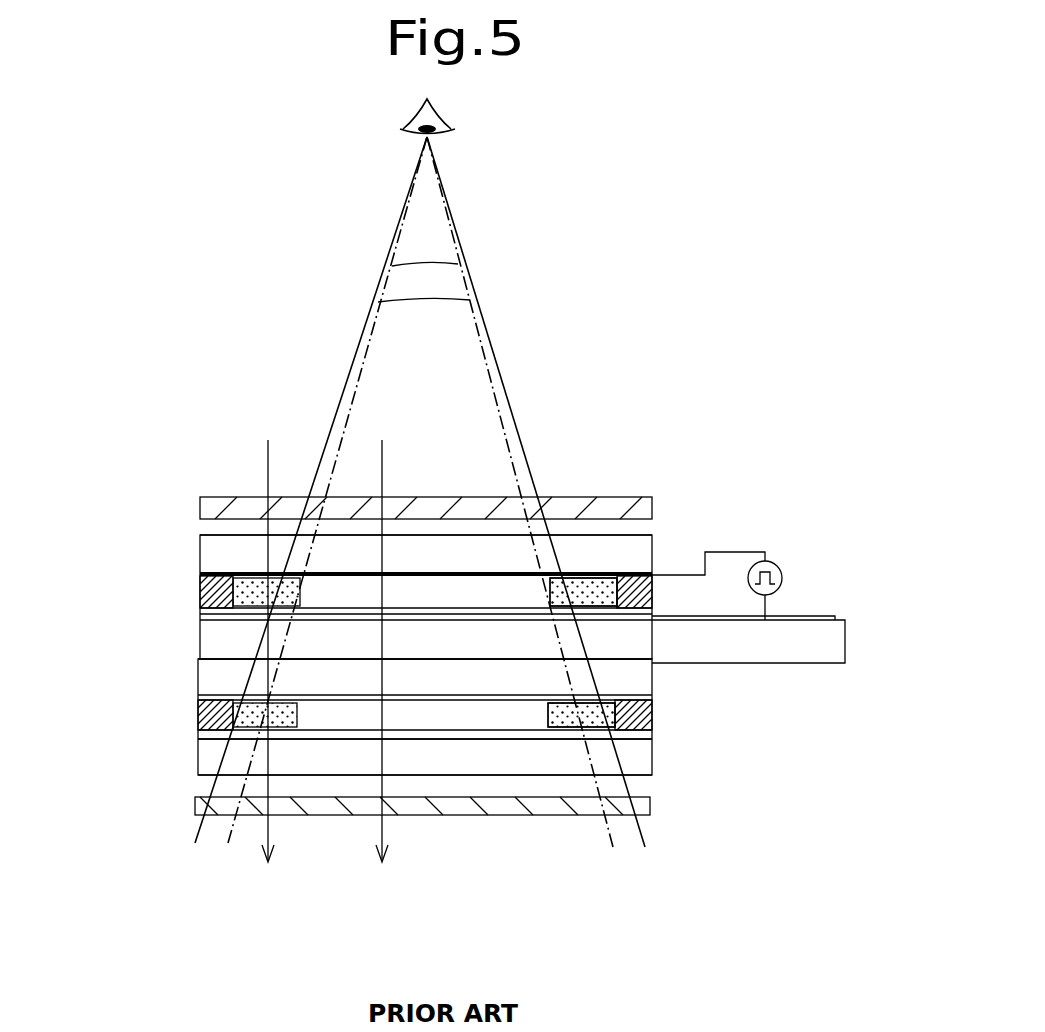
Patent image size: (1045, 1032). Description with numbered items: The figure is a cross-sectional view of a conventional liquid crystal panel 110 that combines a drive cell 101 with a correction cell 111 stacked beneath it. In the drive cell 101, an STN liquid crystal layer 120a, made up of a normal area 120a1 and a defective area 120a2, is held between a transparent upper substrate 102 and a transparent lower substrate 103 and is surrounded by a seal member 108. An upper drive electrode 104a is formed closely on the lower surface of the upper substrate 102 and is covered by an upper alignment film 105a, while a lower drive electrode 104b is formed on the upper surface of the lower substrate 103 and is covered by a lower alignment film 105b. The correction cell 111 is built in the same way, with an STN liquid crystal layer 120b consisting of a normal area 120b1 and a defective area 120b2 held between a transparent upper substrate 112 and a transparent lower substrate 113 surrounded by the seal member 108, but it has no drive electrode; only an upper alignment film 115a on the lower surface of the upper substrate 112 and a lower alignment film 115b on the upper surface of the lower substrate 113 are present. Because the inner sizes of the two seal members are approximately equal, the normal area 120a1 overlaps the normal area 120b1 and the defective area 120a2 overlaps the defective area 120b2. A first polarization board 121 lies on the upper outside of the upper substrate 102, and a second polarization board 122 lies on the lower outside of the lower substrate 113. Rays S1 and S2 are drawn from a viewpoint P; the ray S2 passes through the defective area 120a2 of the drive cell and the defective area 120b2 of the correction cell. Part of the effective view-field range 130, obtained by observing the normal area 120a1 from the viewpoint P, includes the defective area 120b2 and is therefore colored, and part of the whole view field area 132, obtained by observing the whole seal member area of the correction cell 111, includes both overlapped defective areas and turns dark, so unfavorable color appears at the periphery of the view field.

The liquid crystal panel 110 is at (147, 489).
The drive cell 101 is at (178, 532).
The upper substrate 102 is at (593, 541).
The lower substrate 103 is at (830, 643).
The upper drive electrode 104a is at (505, 590).
The lower drive electrode 104b is at (433, 617).
The upper alignment film 105a is at (330, 573).
The lower alignment film 105b is at (362, 610).
The seal member 108 is at (652, 592).
The correction cell 111 is at (178, 662).
The upper substrate 112 is at (640, 680).
The lower substrate 113 is at (468, 765).
The upper alignment film 115a is at (340, 703).
The lower alignment film 115b is at (313, 733).
The STN liquid crystal layer 120a is at (815, 465).
The normal area 120a1 is at (610, 570).
The defective area 120a2 is at (597, 587).
The STN liquid crystal layer 120b is at (772, 800).
The normal area 120b1 is at (565, 777).
The defective area 120b2 is at (530, 722).
The first polarization board 121 is at (617, 498).
The second polarization board 122 is at (530, 805).
The effective view-field range 130 is at (432, 262).
The whole view field area 132 is at (442, 300).
The viewpoint P is at (416, 119).
The position S1 is at (385, 470).
The ray S2 is at (266, 470).